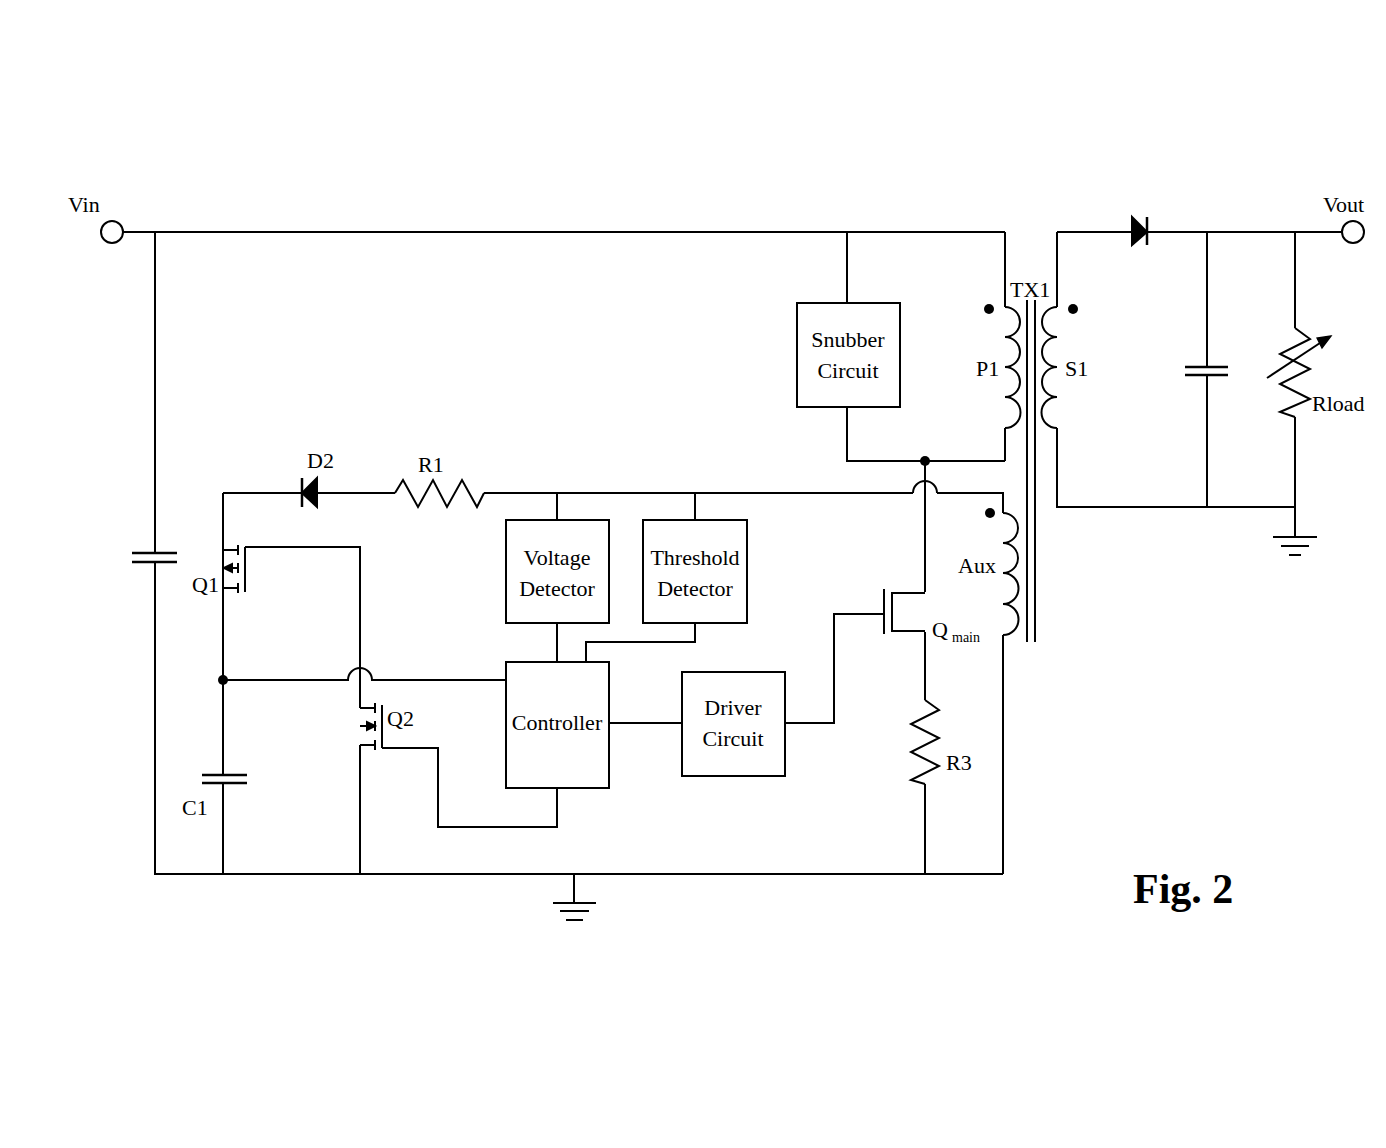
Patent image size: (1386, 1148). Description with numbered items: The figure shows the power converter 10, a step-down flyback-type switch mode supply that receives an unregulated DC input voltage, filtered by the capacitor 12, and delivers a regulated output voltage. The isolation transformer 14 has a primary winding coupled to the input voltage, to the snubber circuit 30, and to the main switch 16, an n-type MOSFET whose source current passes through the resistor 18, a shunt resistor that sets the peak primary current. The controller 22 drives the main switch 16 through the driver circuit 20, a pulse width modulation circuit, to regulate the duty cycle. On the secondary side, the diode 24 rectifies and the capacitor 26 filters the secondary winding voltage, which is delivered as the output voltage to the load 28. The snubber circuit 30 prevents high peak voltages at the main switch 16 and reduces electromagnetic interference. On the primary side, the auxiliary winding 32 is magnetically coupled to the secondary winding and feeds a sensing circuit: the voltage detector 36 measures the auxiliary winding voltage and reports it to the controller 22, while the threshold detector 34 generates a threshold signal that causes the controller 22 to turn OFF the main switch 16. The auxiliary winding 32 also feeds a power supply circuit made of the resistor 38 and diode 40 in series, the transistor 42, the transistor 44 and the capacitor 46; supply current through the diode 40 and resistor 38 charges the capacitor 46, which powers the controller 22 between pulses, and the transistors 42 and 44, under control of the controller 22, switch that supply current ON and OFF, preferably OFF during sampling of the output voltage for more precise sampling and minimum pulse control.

The power converter 10 is at (1132, 128).
The capacitor 12 is at (132, 556).
The isolation transformer 14 is at (1023, 262).
The main switch 16 is at (922, 597).
The resistor 18 is at (938, 724).
The driver circuit 20 is at (786, 772).
The controller 22 is at (612, 784).
The diode 24 is at (1155, 213).
The capacitor 26 is at (1220, 363).
The load 28 is at (1307, 370).
The snubber circuit 30 is at (797, 393).
The auxiliary winding 32 is at (999, 545).
The threshold detector circuit 34 is at (748, 615).
The voltage detector circuit 36 is at (504, 609).
The resistor 38 is at (466, 478).
The diode 40 is at (296, 473).
The transistor 42 is at (221, 557).
The transistor 44 is at (357, 722).
The capacitor 46 is at (203, 777).